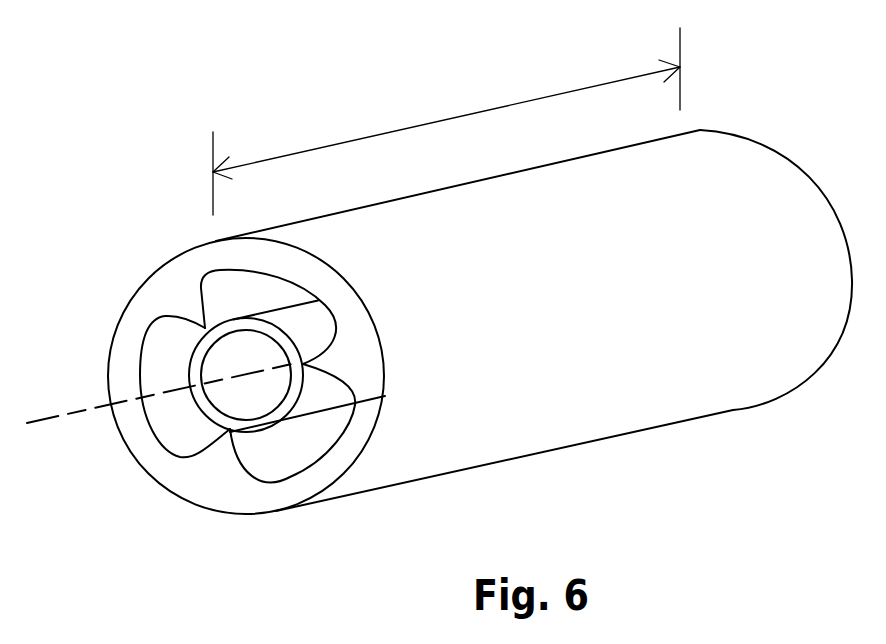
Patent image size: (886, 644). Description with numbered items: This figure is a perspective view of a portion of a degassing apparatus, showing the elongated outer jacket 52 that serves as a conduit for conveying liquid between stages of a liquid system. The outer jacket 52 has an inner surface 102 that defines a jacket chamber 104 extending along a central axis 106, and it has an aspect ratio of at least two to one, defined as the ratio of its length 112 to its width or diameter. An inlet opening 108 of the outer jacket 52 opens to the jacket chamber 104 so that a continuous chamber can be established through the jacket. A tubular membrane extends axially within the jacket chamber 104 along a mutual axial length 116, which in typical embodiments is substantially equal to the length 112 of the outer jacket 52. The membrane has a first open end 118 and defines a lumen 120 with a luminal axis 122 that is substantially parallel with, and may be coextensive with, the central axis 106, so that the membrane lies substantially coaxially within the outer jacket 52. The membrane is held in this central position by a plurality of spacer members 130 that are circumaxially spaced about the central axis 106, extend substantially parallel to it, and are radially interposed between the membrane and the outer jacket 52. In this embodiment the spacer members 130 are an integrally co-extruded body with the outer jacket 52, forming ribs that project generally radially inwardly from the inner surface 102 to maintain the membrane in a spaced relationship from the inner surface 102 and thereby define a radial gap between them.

The outer jacket 52 is at (305, 217).
The inner surface 102 is at (224, 272).
The jacket chamber 104 is at (150, 360).
The central axis 106 is at (110, 413).
The inlet opening 108 is at (323, 430).
The length 112 is at (420, 125).
The mutual axial length 116 is at (788, 160).
The first open end 118 is at (263, 385).
The lumen 120 is at (263, 402).
The luminal axis 122 is at (50, 416).
The spacer members 130 is at (197, 318).